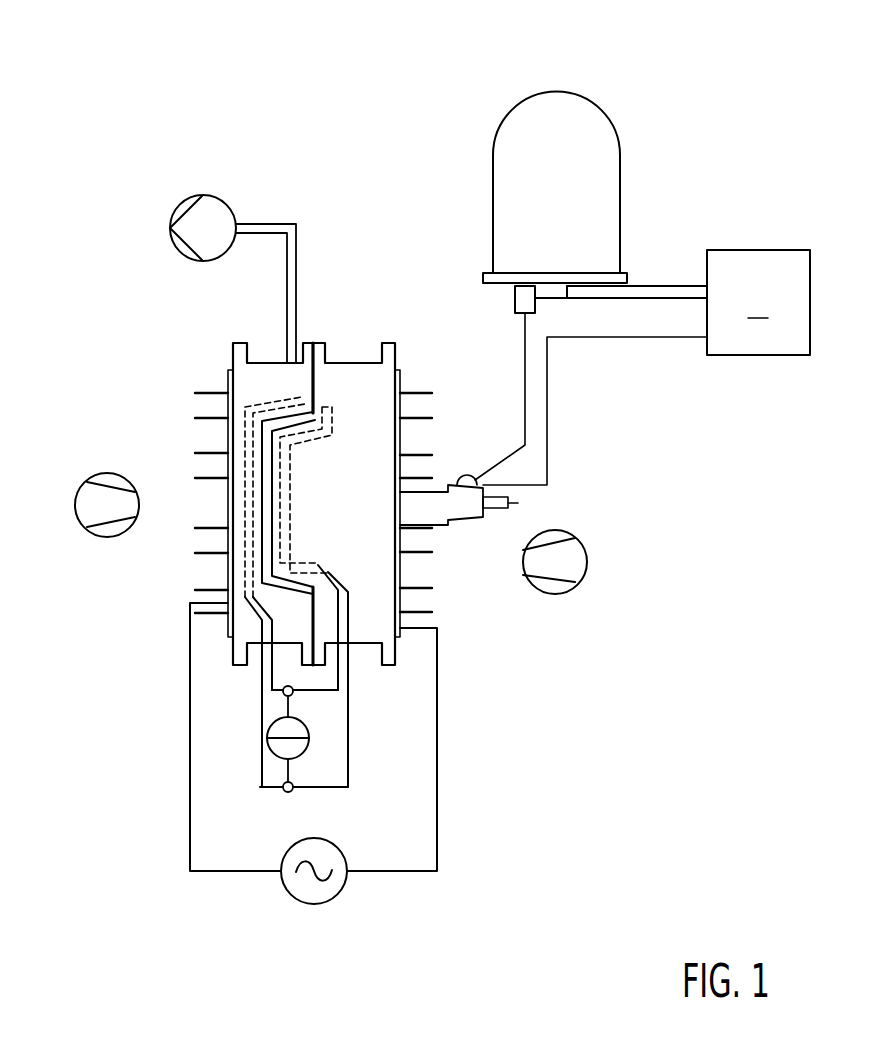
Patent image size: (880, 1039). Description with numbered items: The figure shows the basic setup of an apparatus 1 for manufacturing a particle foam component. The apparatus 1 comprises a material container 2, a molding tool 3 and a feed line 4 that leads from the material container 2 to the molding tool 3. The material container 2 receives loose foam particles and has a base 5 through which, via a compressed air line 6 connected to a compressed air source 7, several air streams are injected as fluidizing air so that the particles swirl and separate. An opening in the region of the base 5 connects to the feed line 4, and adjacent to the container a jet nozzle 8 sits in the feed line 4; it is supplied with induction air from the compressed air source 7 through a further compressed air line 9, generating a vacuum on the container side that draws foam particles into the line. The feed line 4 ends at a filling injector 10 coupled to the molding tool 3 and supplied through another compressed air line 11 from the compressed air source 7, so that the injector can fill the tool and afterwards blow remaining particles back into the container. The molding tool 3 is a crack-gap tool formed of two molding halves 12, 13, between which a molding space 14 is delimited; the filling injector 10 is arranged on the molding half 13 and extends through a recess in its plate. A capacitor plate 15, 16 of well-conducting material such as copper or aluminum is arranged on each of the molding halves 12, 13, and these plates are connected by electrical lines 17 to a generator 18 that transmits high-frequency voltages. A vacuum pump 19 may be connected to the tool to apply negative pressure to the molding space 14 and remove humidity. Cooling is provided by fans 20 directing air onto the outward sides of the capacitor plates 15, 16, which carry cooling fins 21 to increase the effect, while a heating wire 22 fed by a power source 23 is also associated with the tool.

The apparatus 1 is at (322, 69).
The material container 2 is at (610, 108).
The molding tool 3 is at (326, 505).
The feed line 4 is at (525, 376).
The base 5 is at (497, 286).
The compressed air line 6 is at (665, 288).
The compressed air source 7 is at (758, 302).
The jet nozzle 8 is at (520, 305).
The compressed air line 9 is at (630, 298).
The filling injector 10 is at (438, 489).
The compressed air line 11 is at (547, 443).
The molding half 12 is at (270, 360).
The molding half 13 is at (350, 360).
The molding space 14 is at (268, 503).
The capacitor plate 15 is at (228, 437).
The capacitor plate 16 is at (404, 416).
The electrical line 17 is at (190, 790).
The generator 18 is at (313, 905).
The vacuum pump 19 is at (203, 196).
The fan 20 is at (108, 474).
The cooling fin 21 is at (208, 393).
The heating wire 22 is at (248, 565).
The power source 23 is at (310, 727).